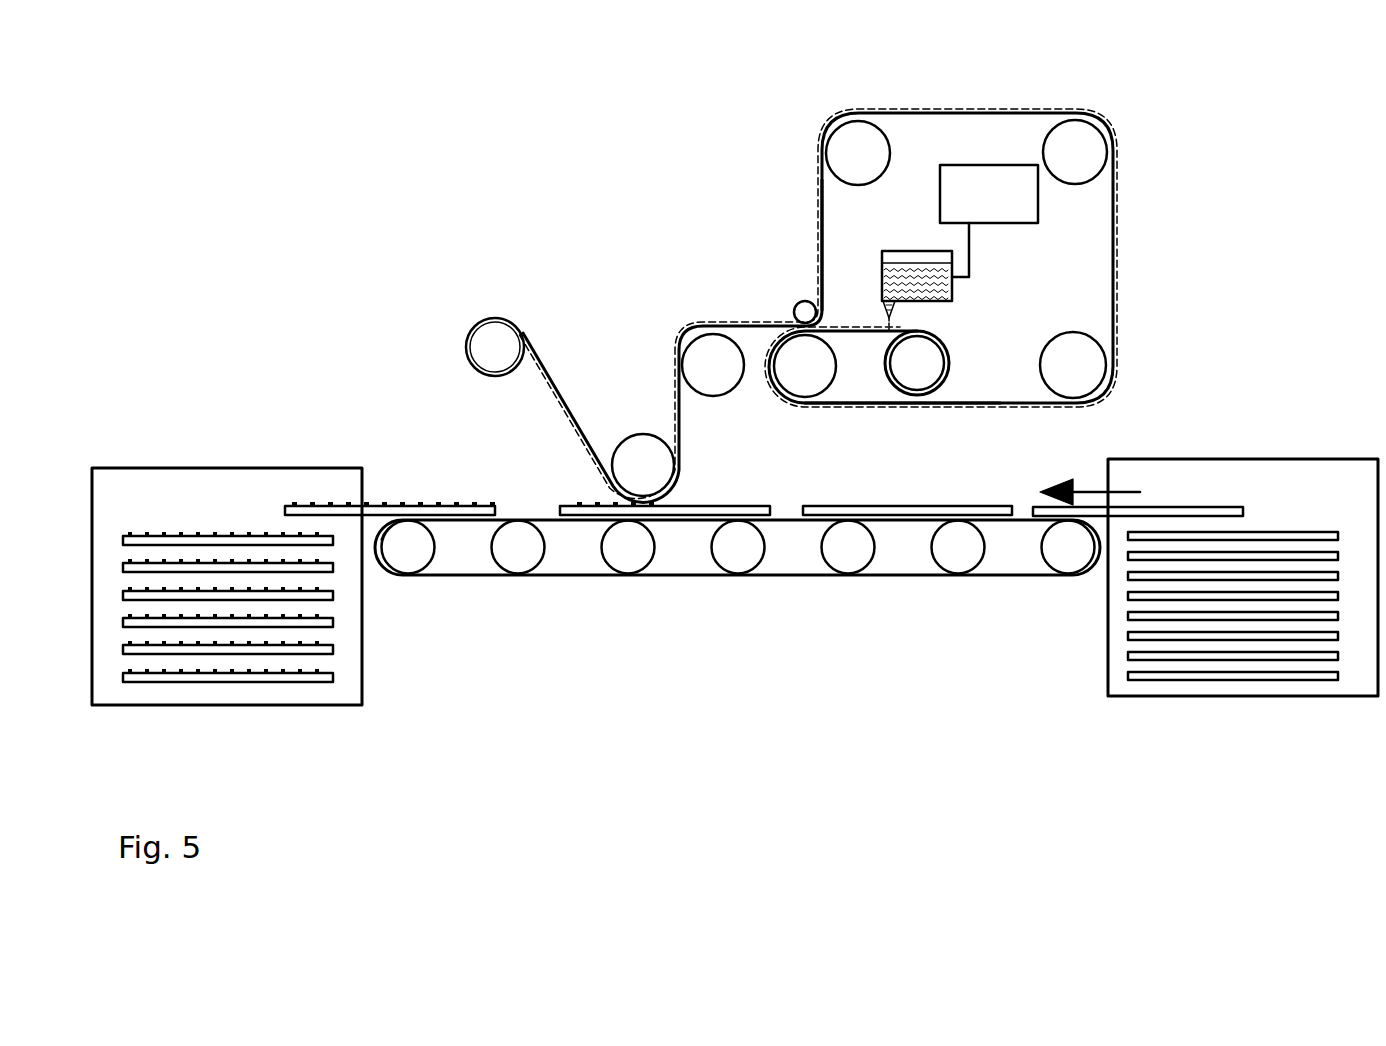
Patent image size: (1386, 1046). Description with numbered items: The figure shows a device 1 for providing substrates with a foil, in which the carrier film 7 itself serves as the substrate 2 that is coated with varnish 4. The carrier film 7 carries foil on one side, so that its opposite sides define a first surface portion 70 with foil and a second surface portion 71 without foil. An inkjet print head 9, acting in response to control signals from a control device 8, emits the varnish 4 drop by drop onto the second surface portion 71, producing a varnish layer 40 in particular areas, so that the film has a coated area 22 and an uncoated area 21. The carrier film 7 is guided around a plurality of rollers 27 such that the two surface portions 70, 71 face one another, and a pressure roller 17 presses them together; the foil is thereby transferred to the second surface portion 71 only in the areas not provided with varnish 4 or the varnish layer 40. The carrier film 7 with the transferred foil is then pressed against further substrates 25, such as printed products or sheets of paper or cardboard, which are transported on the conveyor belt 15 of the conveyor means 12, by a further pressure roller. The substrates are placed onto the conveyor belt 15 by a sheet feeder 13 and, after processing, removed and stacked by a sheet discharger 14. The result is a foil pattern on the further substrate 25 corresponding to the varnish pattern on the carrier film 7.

The device 1 is at (214, 208).
The substrate 2 is at (1114, 242).
The carrier film 7 is at (818, 304).
The varnish 4 is at (907, 262).
The control device 8 is at (1020, 224).
The inkjet print head 9 is at (893, 251).
The conveyor means 12 is at (722, 593).
The sheet feeder 13 is at (1250, 697).
The sheet discharger 14 is at (165, 470).
The conveyor belt 15 is at (887, 580).
The pressure roller 17 is at (797, 302).
The uncoated area 21 is at (940, 404).
The coated area 22 is at (885, 404).
The further substrate 25 is at (1172, 508).
The rollers 27 is at (820, 180).
The varnish layer 40 is at (967, 112).
The first surface portion 70 is at (868, 334).
The second surface portion 71 is at (855, 330).